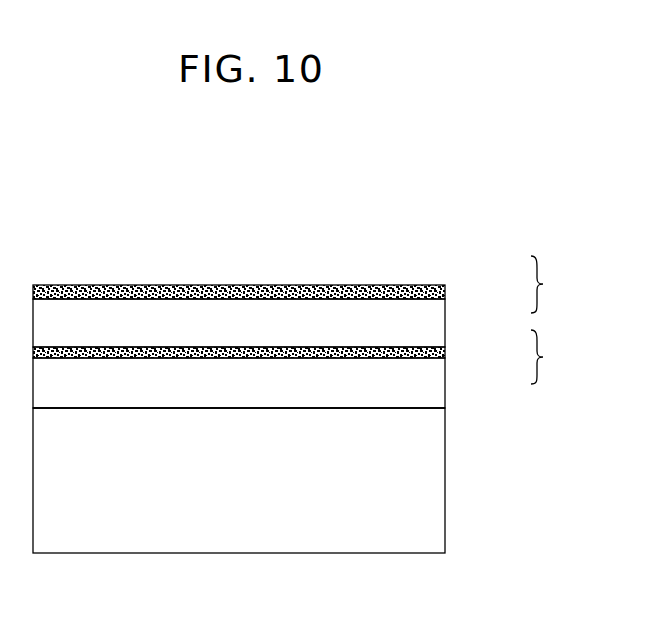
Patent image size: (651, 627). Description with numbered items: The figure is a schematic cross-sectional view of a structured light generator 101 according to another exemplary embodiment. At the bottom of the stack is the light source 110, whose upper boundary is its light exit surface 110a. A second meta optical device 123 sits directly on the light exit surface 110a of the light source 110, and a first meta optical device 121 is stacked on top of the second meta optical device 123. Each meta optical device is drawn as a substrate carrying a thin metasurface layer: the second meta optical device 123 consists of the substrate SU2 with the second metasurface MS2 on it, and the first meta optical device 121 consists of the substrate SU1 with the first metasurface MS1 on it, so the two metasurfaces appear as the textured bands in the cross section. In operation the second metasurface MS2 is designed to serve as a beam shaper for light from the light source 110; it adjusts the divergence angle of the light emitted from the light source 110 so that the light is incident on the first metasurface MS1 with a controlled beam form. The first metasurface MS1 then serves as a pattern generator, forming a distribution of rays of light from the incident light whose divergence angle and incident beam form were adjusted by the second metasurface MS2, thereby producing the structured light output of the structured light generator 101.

The structured light generator 101 is at (453, 233).
The light source 110 is at (434, 481).
The light exit surface 110a is at (417, 408).
The first meta optical device 121 is at (555, 284).
The second meta optical device 123 is at (555, 357).
The first metasurface MS1 is at (447, 292).
The substrate SU1 is at (427, 325).
The second metasurface MS2 is at (447, 353).
The substrate SU2 is at (432, 377).